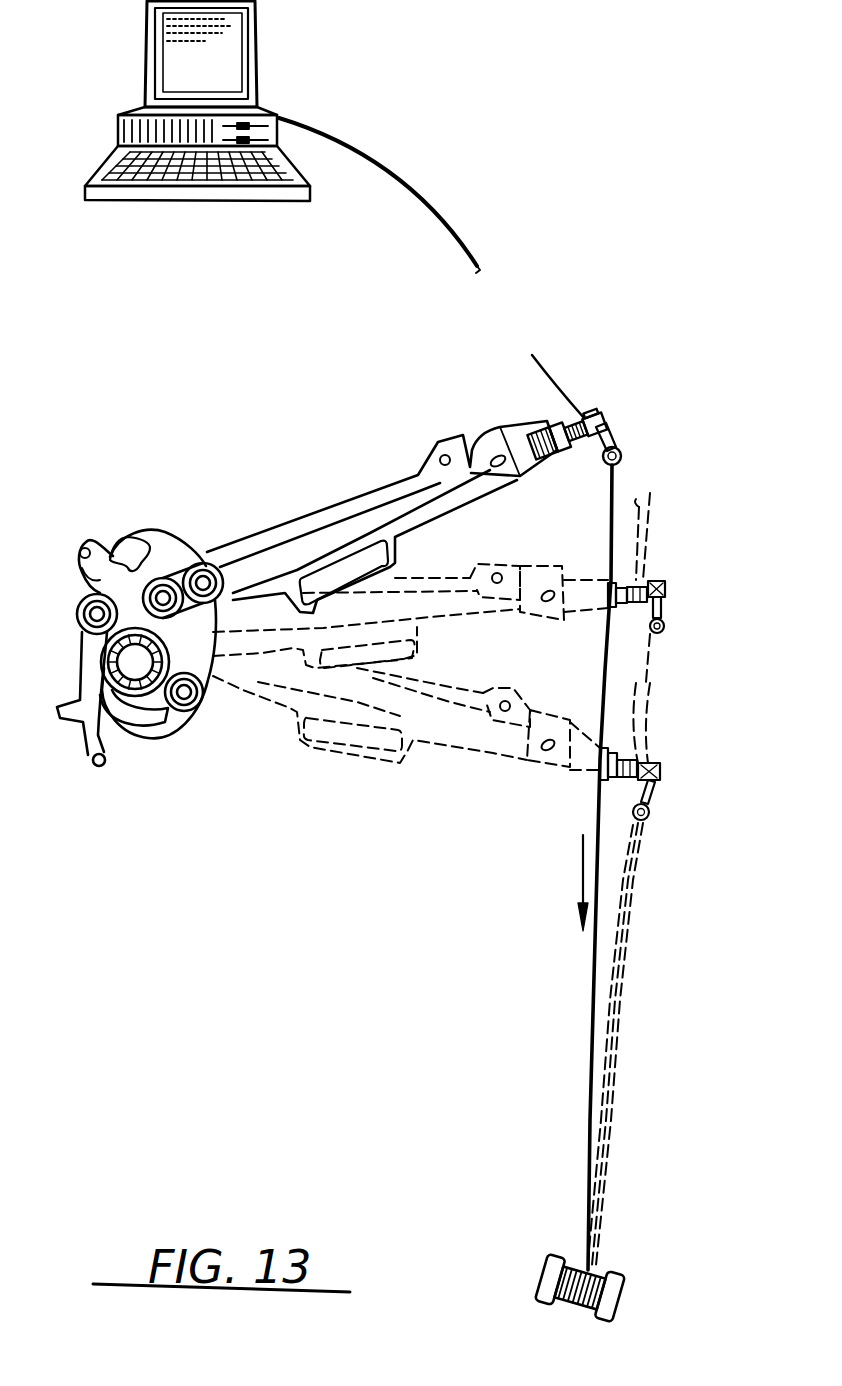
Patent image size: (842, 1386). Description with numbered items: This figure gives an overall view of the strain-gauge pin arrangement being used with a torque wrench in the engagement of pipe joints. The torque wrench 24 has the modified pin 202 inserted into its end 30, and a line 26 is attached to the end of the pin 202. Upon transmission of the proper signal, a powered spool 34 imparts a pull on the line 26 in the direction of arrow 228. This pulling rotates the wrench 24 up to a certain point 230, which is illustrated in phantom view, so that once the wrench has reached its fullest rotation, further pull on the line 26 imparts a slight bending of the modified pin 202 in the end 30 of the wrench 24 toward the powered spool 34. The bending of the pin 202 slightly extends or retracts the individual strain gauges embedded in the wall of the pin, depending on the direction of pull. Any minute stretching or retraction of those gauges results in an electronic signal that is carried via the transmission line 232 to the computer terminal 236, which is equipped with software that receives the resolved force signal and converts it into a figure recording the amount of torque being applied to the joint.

The torque wrench 24 is at (246, 533).
The line 26 is at (616, 497).
The end 30 is at (535, 432).
The powered spool 34 is at (620, 1290).
The modified pin 202 is at (585, 414).
The arrow 228 is at (566, 877).
The point 230 is at (662, 582).
The transmission line 232 is at (456, 217).
The computer terminal 236 is at (282, 89).